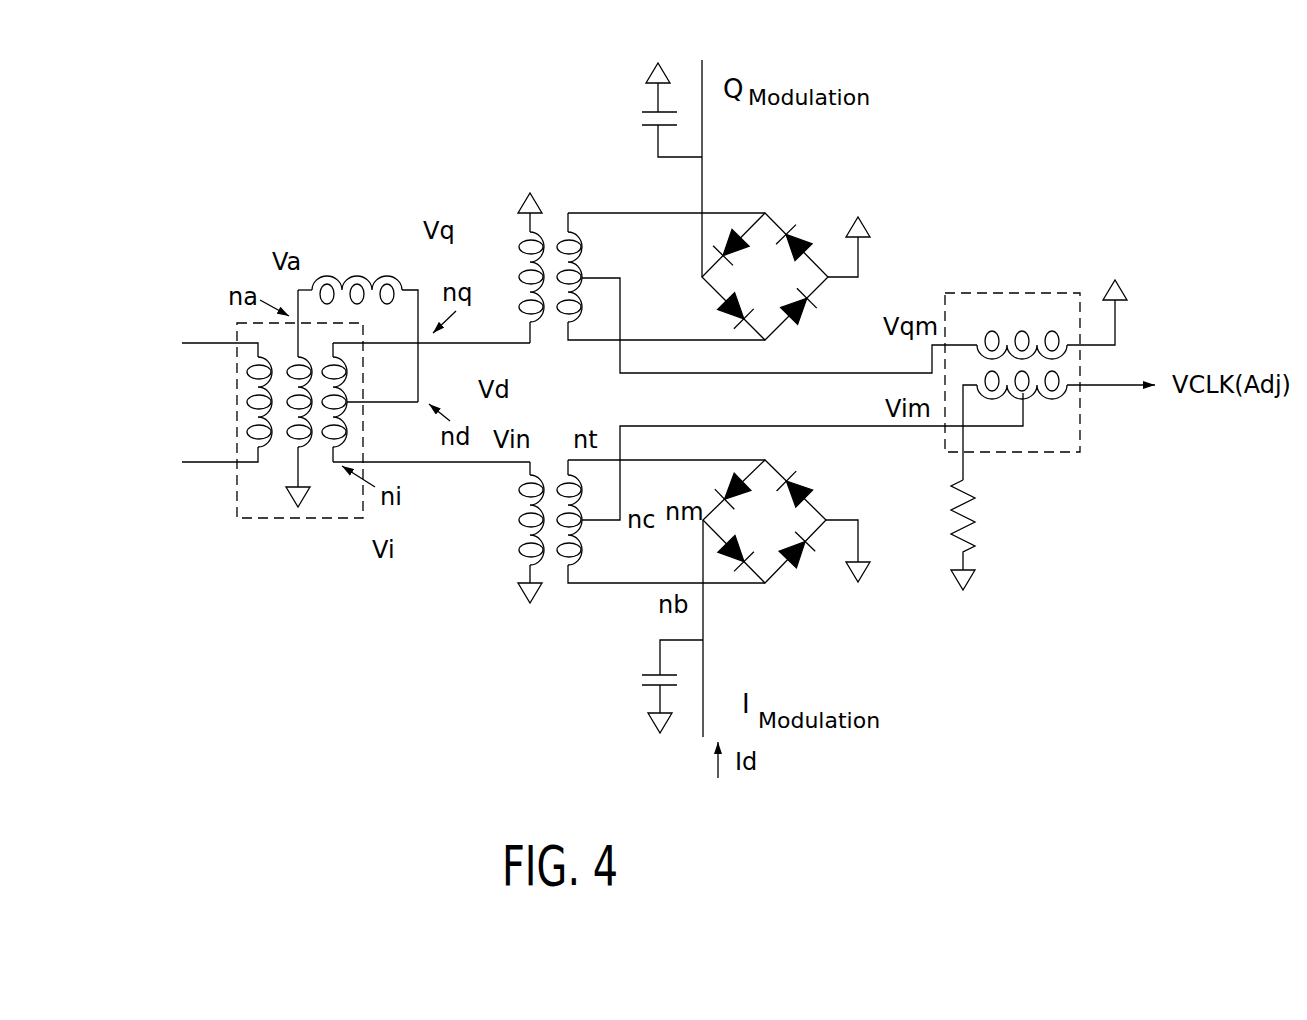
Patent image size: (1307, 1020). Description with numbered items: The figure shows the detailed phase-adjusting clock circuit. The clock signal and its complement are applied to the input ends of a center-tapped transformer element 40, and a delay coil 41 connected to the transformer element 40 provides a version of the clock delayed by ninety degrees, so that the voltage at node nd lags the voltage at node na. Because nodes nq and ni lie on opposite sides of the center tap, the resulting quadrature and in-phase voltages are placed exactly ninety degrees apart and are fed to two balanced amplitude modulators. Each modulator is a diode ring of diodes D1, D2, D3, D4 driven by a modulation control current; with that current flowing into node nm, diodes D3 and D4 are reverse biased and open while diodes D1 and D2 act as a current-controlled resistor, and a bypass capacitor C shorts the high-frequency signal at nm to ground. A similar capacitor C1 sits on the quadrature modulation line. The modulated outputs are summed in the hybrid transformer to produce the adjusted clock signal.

The transformer element 40 is at (254, 508).
The delay coil 41 is at (330, 279).
The capacitor C1 is at (653, 110).
The bypass capacitor C is at (657, 686).
The diode D1 is at (730, 558).
The diode D2 is at (805, 558).
The diode D3 is at (806, 478).
The diode D4 is at (733, 484).